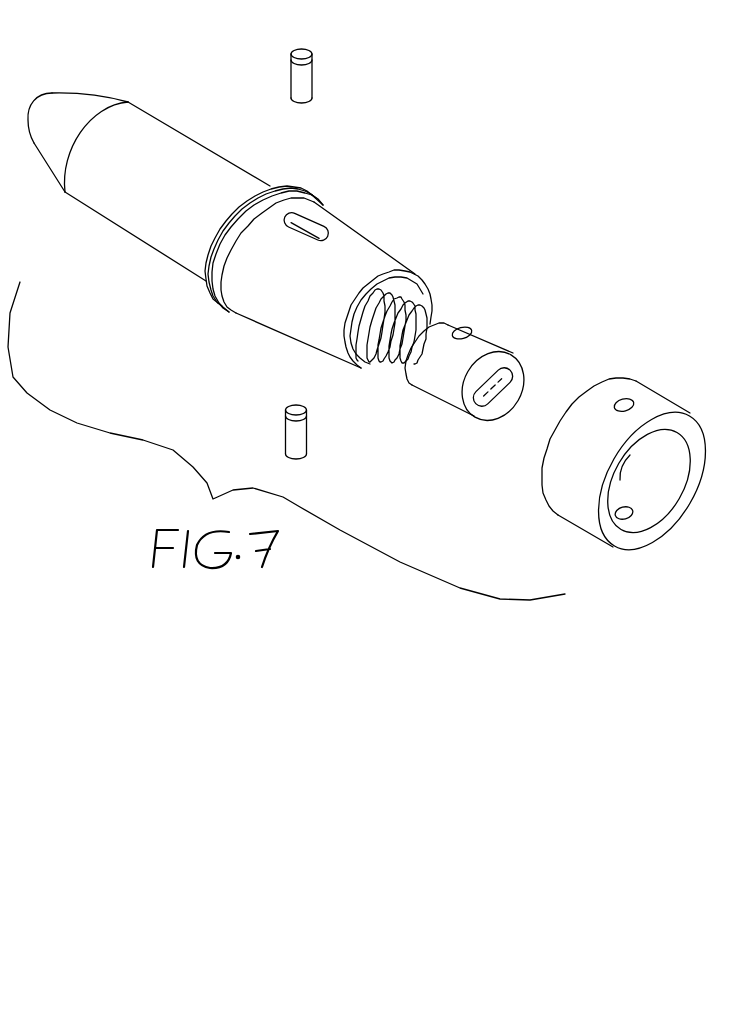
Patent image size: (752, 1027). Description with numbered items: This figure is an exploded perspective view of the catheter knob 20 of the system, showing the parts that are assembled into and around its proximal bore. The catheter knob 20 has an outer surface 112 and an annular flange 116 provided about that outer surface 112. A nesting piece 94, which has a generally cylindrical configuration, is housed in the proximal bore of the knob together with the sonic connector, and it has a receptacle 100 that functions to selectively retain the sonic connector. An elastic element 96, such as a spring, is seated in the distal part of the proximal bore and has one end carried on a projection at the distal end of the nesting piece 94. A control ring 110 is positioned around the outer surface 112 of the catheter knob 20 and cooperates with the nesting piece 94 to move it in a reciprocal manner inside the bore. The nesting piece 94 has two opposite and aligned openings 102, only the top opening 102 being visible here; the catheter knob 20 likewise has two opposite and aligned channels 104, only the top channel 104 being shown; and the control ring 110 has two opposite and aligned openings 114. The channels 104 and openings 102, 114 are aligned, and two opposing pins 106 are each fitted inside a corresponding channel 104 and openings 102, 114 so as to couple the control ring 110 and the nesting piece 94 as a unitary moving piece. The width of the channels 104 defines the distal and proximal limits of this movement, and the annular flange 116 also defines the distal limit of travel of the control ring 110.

The catheter knob 20 is at (176, 221).
The nesting piece 94 is at (496, 323).
The elastic element 96 is at (397, 363).
The receptacle 100 is at (502, 382).
The opening 102 is at (463, 327).
The channel 104 is at (318, 228).
The pin 106 is at (305, 72).
The control ring 110 is at (662, 410).
The outer surface 112 is at (268, 293).
The opening 114 is at (625, 398).
The annular flange 116 is at (290, 188).